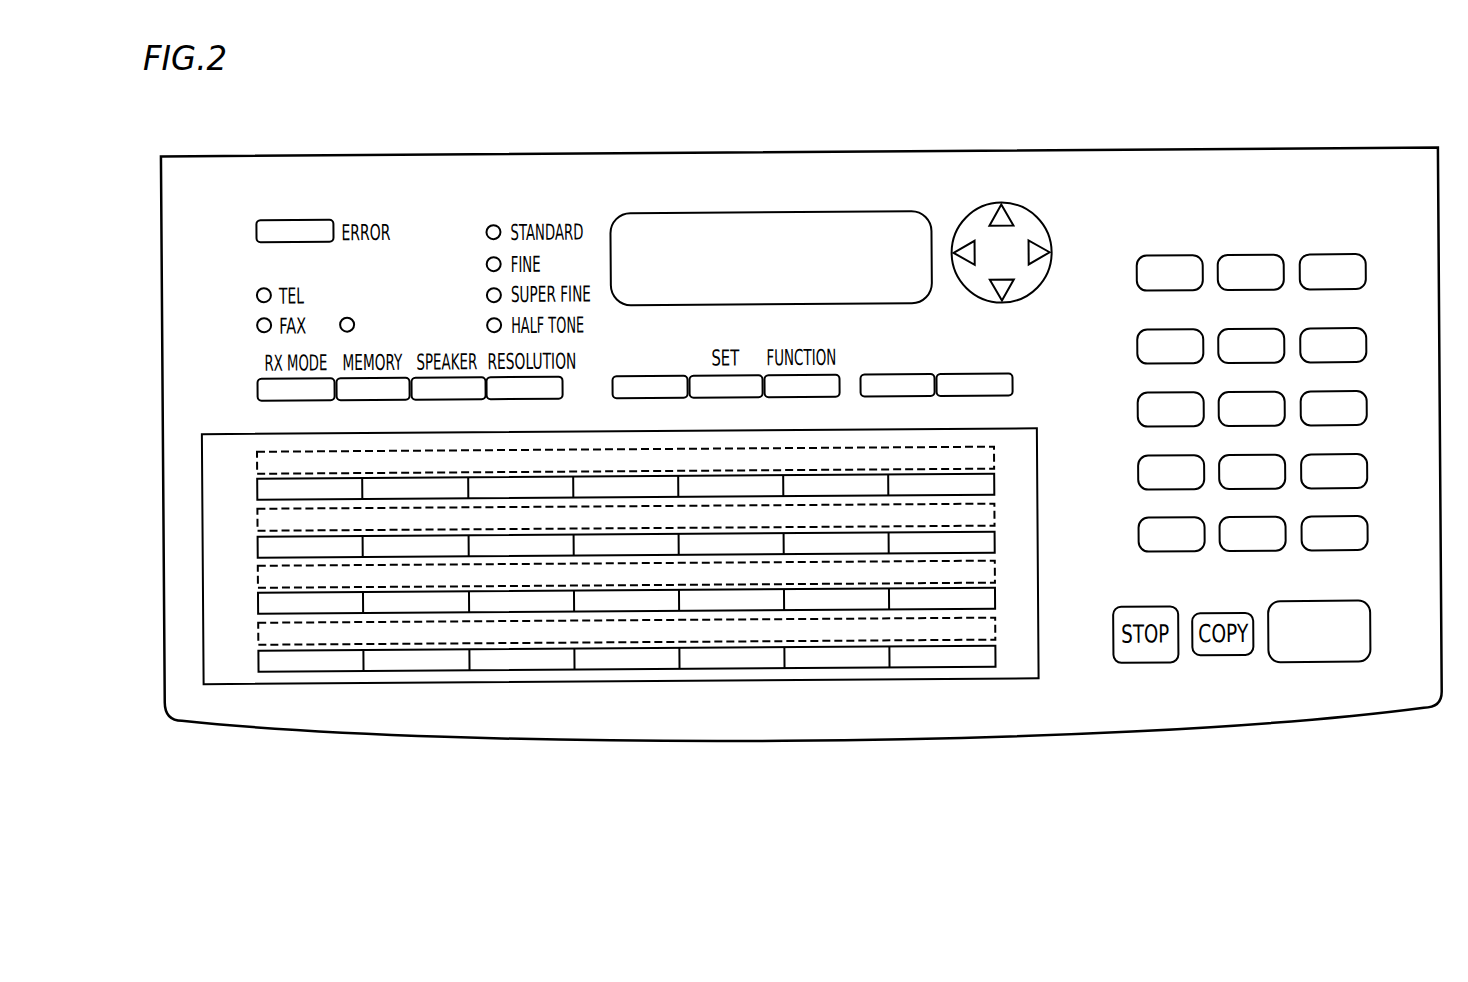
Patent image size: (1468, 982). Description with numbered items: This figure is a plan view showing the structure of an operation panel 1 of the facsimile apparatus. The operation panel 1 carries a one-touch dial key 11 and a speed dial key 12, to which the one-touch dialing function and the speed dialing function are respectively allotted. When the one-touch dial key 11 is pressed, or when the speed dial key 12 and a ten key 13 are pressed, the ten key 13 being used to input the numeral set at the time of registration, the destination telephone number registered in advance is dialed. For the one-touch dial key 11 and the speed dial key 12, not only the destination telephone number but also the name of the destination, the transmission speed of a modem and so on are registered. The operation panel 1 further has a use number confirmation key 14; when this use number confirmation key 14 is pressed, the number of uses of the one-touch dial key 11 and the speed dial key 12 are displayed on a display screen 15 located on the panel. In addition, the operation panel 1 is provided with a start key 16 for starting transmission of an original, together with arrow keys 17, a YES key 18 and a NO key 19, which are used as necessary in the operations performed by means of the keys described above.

The operation panel 1 is at (730, 713).
The one-touch dial key 11 is at (522, 655).
The speed dial key 12 is at (1172, 218).
The ten key 13 is at (1142, 387).
The use number confirmation key 14 is at (649, 335).
The display screen 15 is at (727, 248).
The start key 16 is at (1310, 667).
The arrow keys 17 is at (1034, 211).
The YES key 18 is at (876, 375).
The NO key 19 is at (953, 375).